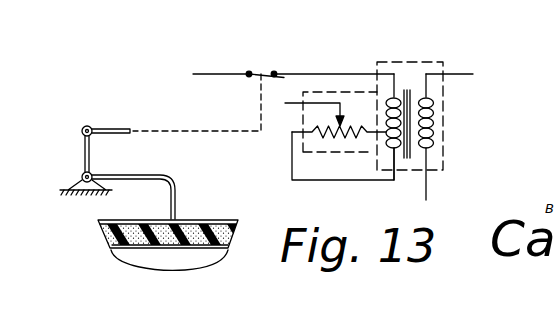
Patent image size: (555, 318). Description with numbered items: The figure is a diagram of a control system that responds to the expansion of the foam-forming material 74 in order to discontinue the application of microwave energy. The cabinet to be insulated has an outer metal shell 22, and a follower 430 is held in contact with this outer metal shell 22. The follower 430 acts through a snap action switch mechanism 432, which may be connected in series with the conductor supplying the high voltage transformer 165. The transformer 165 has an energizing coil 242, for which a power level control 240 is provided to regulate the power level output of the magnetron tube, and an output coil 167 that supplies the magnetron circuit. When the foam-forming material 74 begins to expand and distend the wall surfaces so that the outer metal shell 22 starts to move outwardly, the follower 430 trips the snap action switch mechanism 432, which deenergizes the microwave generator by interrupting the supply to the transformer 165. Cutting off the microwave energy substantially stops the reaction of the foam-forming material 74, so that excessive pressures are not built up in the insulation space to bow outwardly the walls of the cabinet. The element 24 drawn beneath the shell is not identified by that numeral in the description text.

The snap action switch mechanism 432 is at (249, 70).
The power level control 240 is at (330, 91).
The high voltage transformer 165 is at (409, 110).
The output coil 167 is at (433, 122).
The energizing coil 242 is at (390, 145).
The follower 430 is at (176, 182).
The outer metal shell 22 is at (200, 219).
The foam-forming material 74 is at (108, 229).
The bowl bottom 24 is at (118, 255).